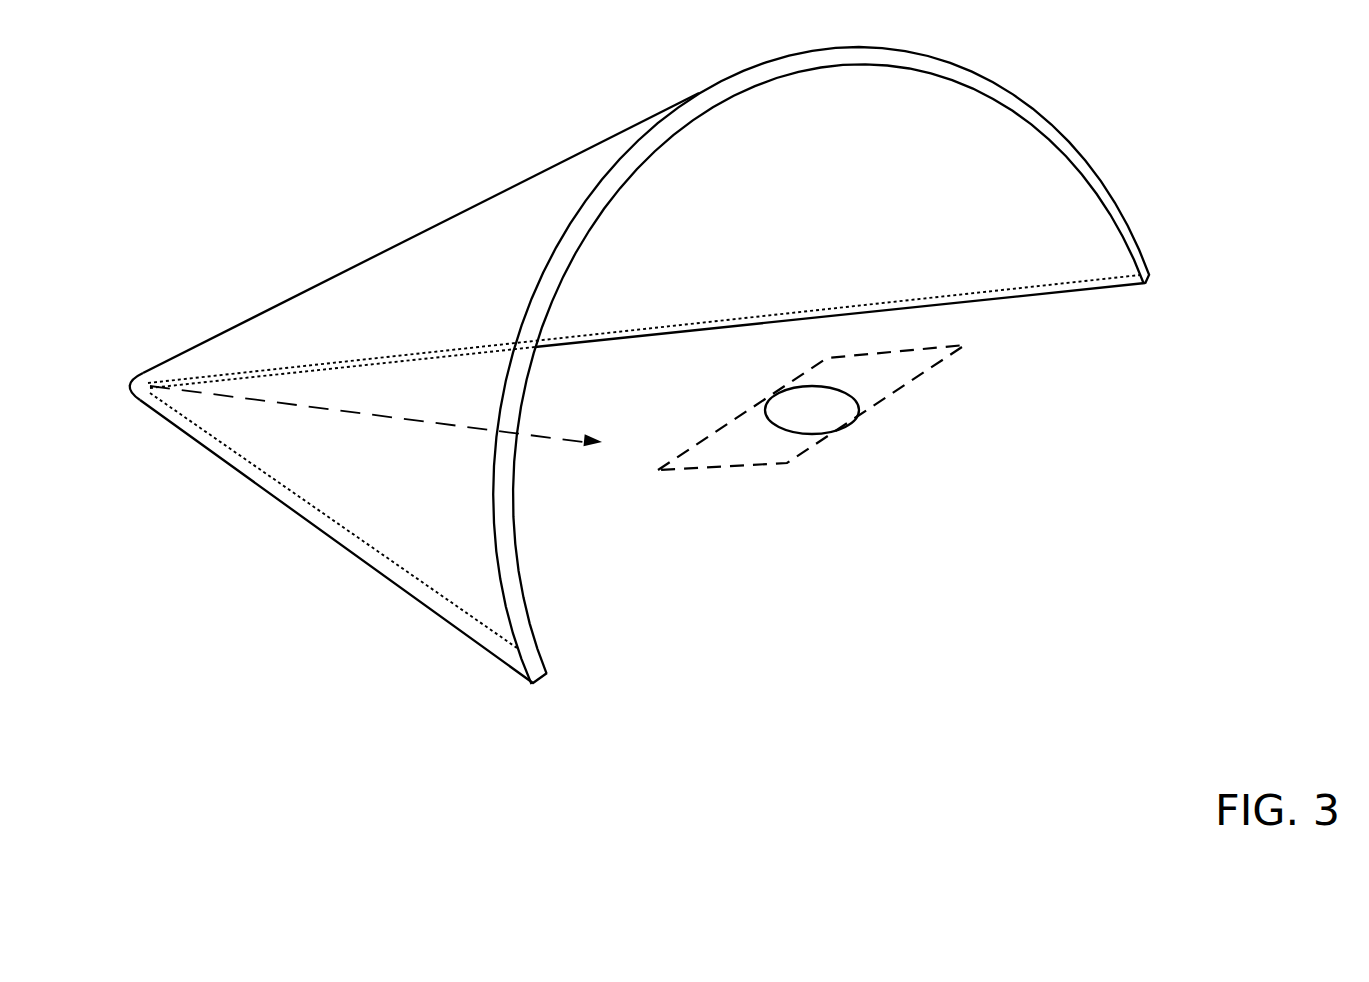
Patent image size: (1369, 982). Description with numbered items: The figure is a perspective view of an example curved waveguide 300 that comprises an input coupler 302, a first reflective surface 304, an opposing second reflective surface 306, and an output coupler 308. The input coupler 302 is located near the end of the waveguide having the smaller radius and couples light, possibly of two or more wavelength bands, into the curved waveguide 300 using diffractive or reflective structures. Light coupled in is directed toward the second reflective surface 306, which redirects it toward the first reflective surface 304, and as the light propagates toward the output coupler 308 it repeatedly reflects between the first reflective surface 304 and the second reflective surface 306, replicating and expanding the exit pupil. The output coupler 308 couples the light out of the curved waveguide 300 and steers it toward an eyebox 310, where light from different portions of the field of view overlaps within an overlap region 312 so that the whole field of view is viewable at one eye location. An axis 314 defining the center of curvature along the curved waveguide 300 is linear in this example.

The curved waveguide 300 is at (151, 212).
The input coupler 302 is at (141, 388).
The first reflective surface 304 is at (413, 264).
The second reflective surface 306 is at (603, 303).
The output coupler 308 is at (678, 155).
The eyebox 310 is at (767, 461).
The overlap region 312 is at (837, 424).
The axis 314 is at (394, 424).